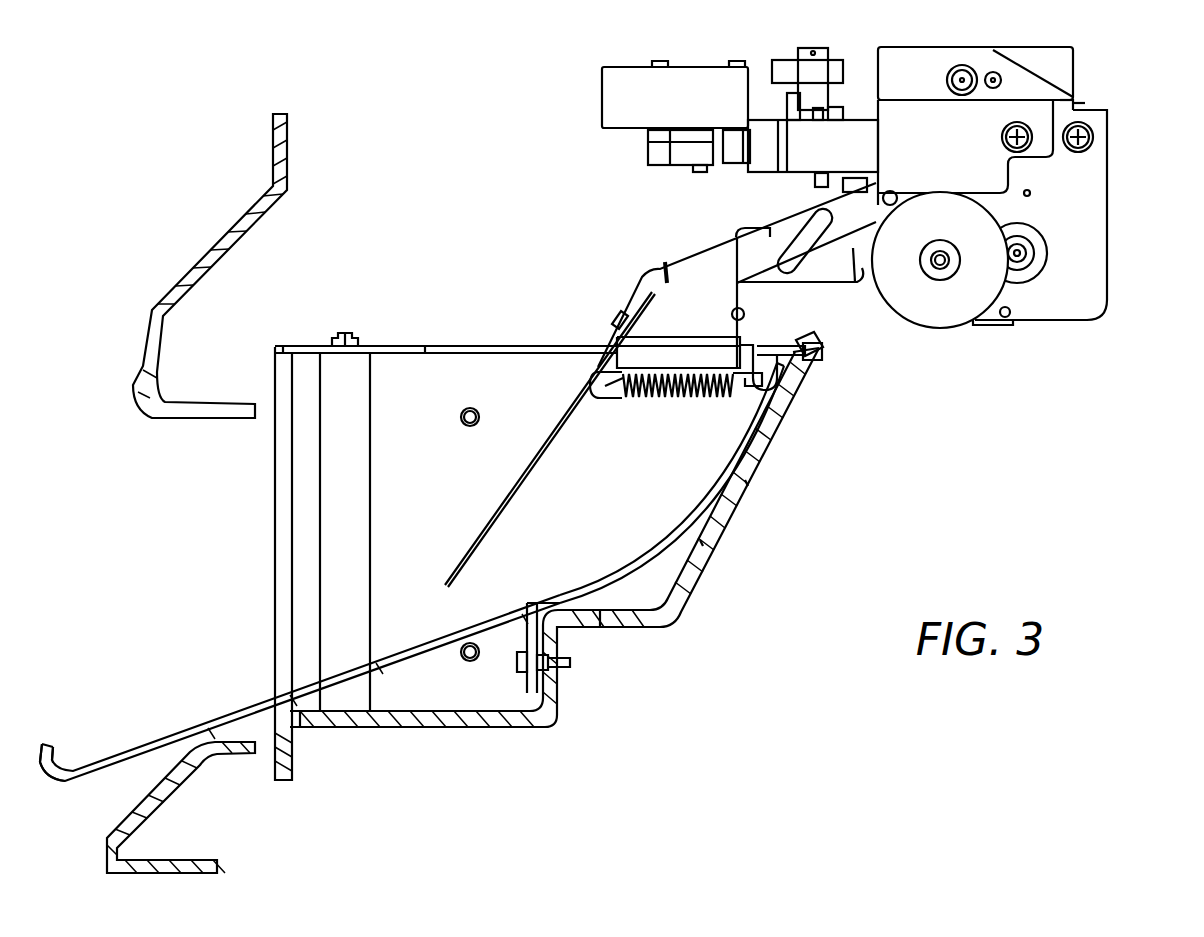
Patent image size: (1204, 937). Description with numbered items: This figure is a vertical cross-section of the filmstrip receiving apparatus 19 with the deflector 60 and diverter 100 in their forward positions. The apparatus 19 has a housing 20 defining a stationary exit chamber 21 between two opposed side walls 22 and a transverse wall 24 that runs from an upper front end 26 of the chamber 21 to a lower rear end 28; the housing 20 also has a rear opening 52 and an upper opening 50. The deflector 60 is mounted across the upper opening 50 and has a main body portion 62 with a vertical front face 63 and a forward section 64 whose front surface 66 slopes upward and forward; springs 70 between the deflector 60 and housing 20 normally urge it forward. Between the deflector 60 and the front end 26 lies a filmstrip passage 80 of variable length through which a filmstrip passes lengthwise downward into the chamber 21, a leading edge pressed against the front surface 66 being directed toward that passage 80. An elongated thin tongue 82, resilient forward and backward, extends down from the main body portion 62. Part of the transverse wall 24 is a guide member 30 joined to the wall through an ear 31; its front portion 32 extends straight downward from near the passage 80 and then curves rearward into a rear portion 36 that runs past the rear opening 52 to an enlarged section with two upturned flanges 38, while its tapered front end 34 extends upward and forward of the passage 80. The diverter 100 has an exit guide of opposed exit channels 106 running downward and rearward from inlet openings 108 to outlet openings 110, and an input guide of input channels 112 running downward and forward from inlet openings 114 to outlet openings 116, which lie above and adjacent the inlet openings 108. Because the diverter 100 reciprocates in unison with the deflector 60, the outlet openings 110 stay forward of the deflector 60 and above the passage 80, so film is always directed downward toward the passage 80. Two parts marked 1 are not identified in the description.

The mounting bracket 1 is at (222, 250).
The filmstrip receiving apparatus 19 is at (786, 436).
The housing 20 is at (758, 482).
The stationary exit chamber 21 is at (626, 578).
The side walls 22 is at (452, 505).
The transverse wall 24 is at (718, 538).
The upper front end 26 is at (813, 370).
The lower rear end 28 is at (300, 700).
The guide member 30 is at (474, 618).
The ear 31 is at (510, 648).
The front portion 32 is at (718, 486).
The front end 34 is at (820, 352).
The rear portion 36 is at (408, 648).
The upturned flanges 38 is at (55, 762).
The upper opening 50 is at (505, 348).
The rear opening 52 is at (272, 518).
The deflector 60 is at (666, 262).
The main body portion 62 is at (696, 275).
The vertical front face 63 is at (732, 322).
The forward section 64 is at (753, 252).
The front surface 66 is at (795, 262).
The springs 70 is at (683, 402).
The filmstrip passage 80 is at (770, 352).
The elongated thin tongue 82 is at (528, 483).
The diverter 100 is at (858, 38).
The exit channels 106 is at (855, 248).
The inlet openings 108 is at (1077, 103).
The outlet openings 110 is at (810, 272).
The input channels 112 is at (1073, 100).
The inlet openings 114 is at (1022, 53).
The outlet openings 116 is at (1074, 97).